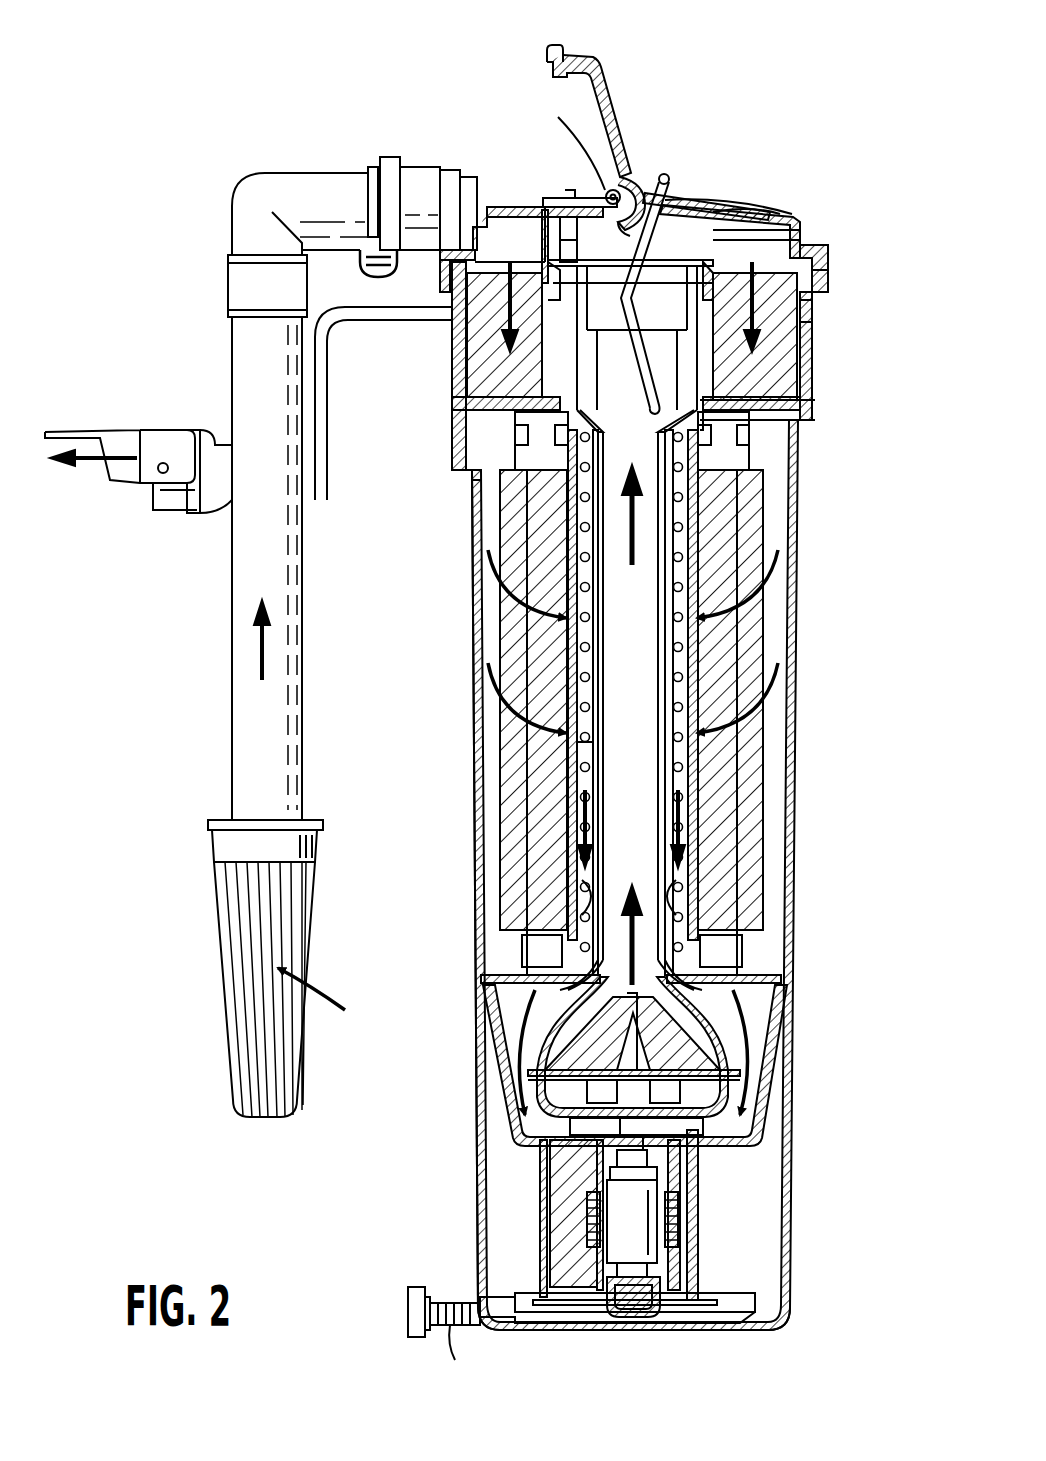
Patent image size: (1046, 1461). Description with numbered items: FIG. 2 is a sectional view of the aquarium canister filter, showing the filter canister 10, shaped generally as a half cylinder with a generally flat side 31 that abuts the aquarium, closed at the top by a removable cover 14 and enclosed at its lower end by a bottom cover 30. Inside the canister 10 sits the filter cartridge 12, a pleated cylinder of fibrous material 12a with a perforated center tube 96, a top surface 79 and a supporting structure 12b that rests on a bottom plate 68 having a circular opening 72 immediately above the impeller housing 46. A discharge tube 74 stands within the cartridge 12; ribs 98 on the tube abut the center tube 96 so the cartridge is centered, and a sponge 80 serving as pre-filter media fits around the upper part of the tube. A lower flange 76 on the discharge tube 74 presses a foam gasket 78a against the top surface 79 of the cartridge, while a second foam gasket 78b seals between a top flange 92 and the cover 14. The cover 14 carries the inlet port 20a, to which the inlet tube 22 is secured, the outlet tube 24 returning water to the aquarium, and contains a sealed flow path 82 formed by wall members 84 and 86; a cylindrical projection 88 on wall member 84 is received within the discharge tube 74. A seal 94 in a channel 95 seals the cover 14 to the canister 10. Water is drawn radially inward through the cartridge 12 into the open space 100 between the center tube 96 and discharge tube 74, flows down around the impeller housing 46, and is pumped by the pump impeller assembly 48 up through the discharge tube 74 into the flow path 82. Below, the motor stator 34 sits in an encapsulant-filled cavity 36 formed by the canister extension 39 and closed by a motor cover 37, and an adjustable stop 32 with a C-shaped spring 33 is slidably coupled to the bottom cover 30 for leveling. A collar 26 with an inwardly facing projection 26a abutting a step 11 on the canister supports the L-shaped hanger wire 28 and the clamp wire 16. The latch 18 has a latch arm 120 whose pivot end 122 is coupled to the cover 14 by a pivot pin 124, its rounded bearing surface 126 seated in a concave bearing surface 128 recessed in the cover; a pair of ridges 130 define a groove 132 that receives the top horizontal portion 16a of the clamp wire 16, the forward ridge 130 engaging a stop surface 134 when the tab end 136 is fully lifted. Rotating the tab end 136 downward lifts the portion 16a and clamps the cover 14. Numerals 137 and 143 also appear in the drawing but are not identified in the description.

The filter canister 10 is at (782, 728).
The step 11 is at (466, 393).
The filter cartridge 12 is at (686, 671).
The fibrous material 12a is at (765, 866).
The supporting structure 12b is at (760, 452).
The removable cover 14 is at (800, 228).
The clamp wire 16 is at (646, 400).
The top horizontal portion of clamp wire 16a is at (668, 178).
The latch 18 is at (570, 78).
The inlet port 20a is at (420, 180).
The inlet tube 22 is at (266, 190).
The outlet tube 24 is at (138, 471).
The collar 26 is at (814, 346).
The inwardly facing projection 26a is at (454, 428).
The hanger wire 28 is at (316, 341).
The bottom cover 30 is at (788, 1280).
The flat side 31 is at (473, 552).
The adjustable stop 32 is at (536, 1316).
The C-shaped spring 33 is at (460, 1300).
The stator 34 is at (276, 968).
The cavity 36 is at (545, 1212).
The motor cover 37 is at (662, 1314).
The canister extension 39 is at (698, 1245).
The impeller housing 46 is at (768, 1048).
The pump impeller assembly 48 is at (690, 1160).
The bottom plate 68 is at (526, 962).
The circular opening 72 is at (585, 927).
The discharge tube 74 is at (572, 658).
The lower flange 76 is at (800, 378).
The foam gasket 78a is at (812, 399).
The foam gasket 78b is at (813, 322).
The top surface 79 is at (795, 425).
The sponge 80 is at (488, 346).
The sealed flow path 82 is at (722, 214).
The wall member 84 is at (665, 282).
The wall member 86 is at (492, 207).
The cylindrical projection 88 is at (656, 312).
The top flange 92 is at (452, 296).
The seal 94 is at (828, 254).
The channel 95 is at (828, 288).
The perforated center tube 96 is at (577, 744).
The ribs 98 is at (574, 888).
The open space 100 is at (692, 663).
The latch arm 120 is at (589, 120).
The pivot end 122 is at (606, 192).
The pivot pin 124 is at (570, 128).
The rounded bearing surface 126 is at (590, 196).
The concave bearing surface 128 is at (545, 245).
The ridges 130 is at (622, 182).
The groove 132 is at (635, 200).
The stop surface 134 is at (742, 200).
The tab end 136 is at (562, 48).
The drain outlet 137 is at (473, 1358).
The drain cap 143 is at (414, 1316).